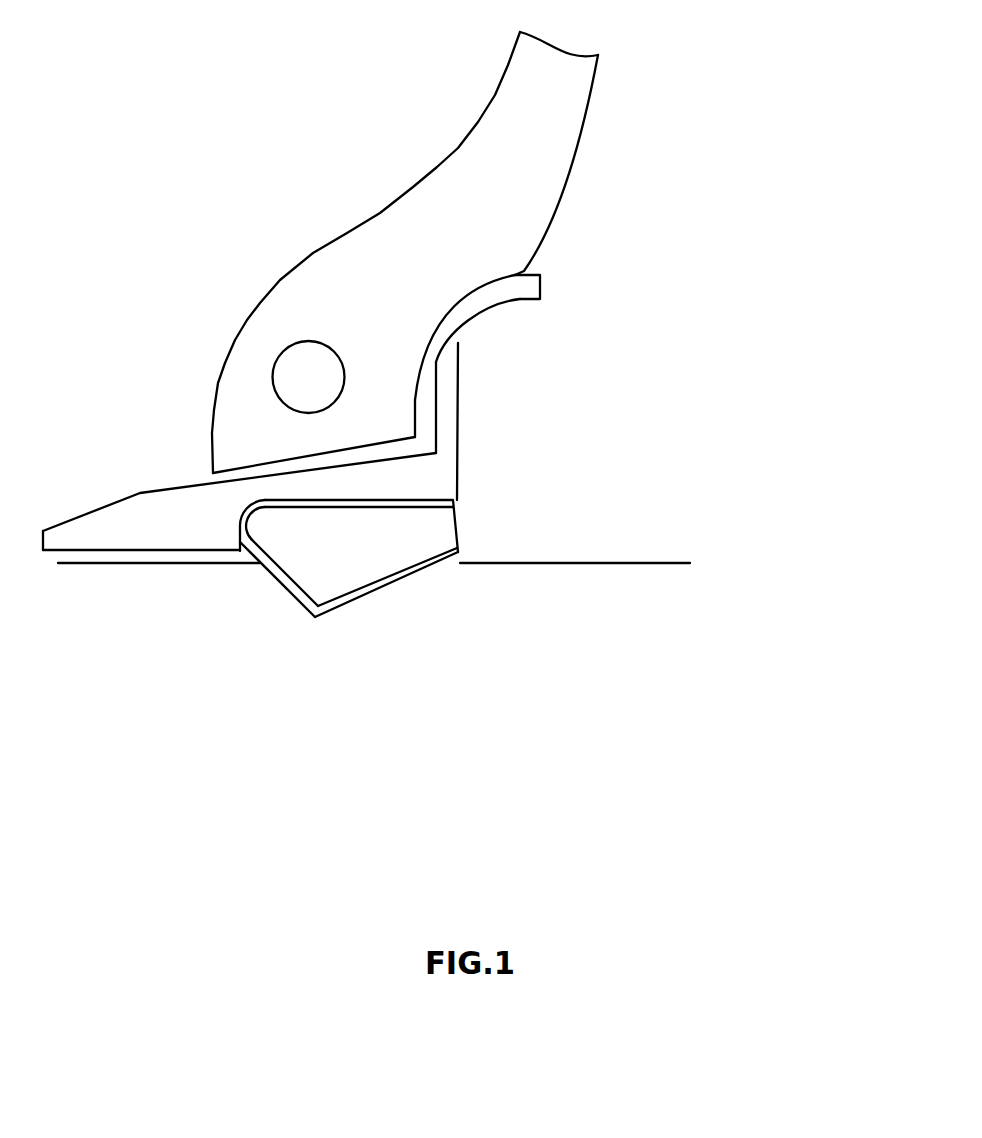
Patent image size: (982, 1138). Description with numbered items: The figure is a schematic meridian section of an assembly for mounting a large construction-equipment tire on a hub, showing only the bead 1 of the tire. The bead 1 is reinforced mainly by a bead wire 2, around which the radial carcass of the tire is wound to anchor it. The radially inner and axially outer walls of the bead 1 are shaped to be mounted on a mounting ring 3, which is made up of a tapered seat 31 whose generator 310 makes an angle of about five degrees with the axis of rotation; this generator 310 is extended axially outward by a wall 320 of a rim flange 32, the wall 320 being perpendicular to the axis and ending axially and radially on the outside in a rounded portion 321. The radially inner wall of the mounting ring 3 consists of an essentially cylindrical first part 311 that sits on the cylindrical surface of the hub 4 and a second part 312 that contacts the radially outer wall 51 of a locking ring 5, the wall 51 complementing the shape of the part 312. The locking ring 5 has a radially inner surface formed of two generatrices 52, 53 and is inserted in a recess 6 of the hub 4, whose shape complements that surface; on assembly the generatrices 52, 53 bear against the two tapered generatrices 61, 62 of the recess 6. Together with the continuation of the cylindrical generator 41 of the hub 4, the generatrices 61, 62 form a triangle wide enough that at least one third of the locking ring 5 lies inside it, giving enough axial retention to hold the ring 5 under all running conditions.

The bead 1 is at (387, 242).
The bead wire 2 is at (295, 377).
The mounting ring 3 is at (539, 371).
The rim flange 32 is at (452, 343).
The wall 320 is at (436, 415).
The rounded portion 321 is at (517, 274).
The tapered seat 31 is at (280, 534).
The generator 310 is at (163, 490).
The first part 311 is at (75, 560).
The second part 312 is at (373, 500).
The hub 4 is at (374, 586).
The cylindrical generator 41 is at (603, 563).
The locking ring 5 is at (378, 588).
The radially outer wall 51 is at (417, 500).
The generatrix 52 is at (420, 570).
The generatrix 53 is at (297, 583).
The recess 6 is at (329, 618).
The tapered generatrix 61 is at (270, 577).
The tapered generatrix 62 is at (388, 589).